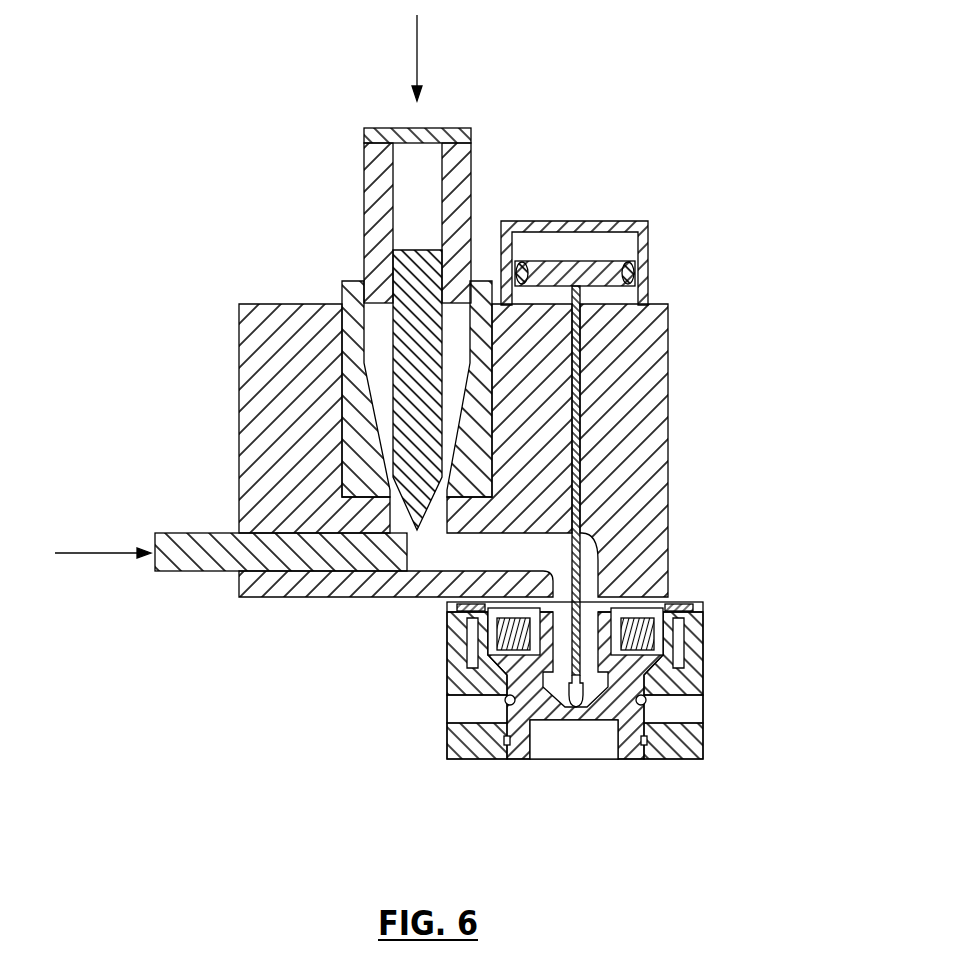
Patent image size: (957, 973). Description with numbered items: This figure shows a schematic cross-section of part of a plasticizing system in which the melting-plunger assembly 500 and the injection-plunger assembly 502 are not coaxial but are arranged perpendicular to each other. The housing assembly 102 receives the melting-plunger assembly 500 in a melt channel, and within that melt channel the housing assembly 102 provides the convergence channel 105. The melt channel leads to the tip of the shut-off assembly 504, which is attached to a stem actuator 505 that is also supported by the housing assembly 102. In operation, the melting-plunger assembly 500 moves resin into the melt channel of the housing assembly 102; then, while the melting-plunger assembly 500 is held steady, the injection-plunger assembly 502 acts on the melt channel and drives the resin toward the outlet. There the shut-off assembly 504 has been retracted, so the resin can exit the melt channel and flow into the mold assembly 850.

The melting-plunger assembly 500 is at (365, 135).
The stem actuator 505 is at (650, 243).
The shut-off assembly 504 is at (575, 350).
The housing assembly 102 is at (668, 445).
The convergence channel 105 is at (383, 427).
The injection-plunger assembly 502 is at (193, 571).
The mold assembly 850 is at (517, 752).